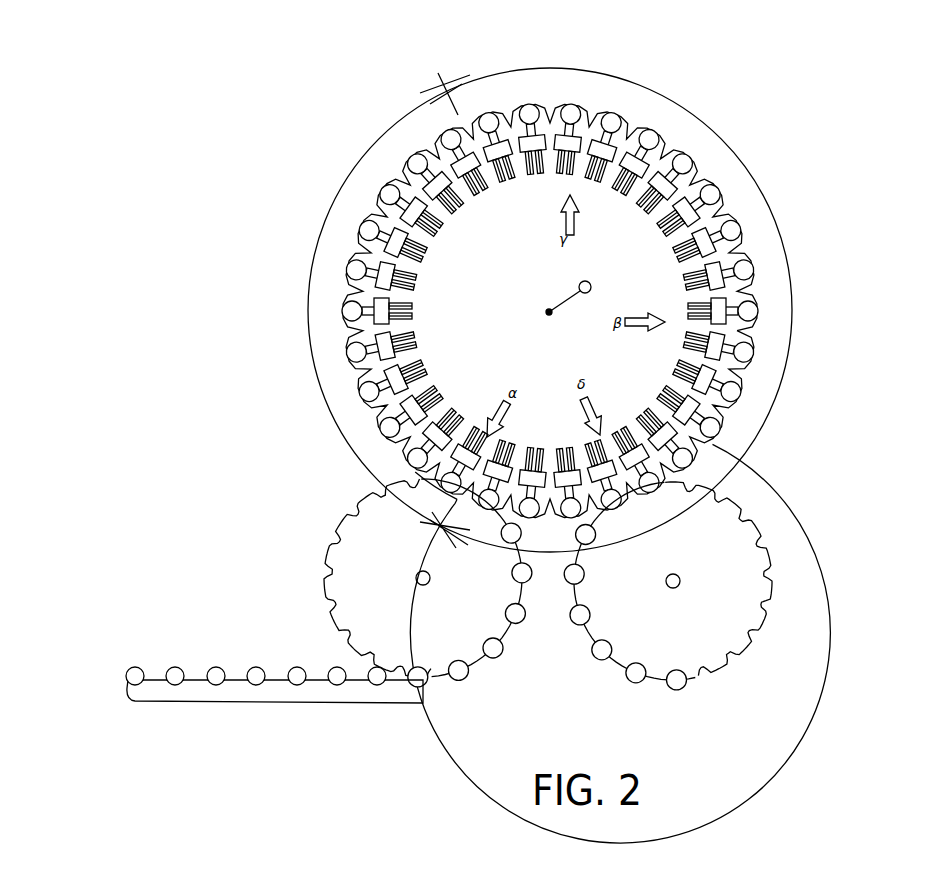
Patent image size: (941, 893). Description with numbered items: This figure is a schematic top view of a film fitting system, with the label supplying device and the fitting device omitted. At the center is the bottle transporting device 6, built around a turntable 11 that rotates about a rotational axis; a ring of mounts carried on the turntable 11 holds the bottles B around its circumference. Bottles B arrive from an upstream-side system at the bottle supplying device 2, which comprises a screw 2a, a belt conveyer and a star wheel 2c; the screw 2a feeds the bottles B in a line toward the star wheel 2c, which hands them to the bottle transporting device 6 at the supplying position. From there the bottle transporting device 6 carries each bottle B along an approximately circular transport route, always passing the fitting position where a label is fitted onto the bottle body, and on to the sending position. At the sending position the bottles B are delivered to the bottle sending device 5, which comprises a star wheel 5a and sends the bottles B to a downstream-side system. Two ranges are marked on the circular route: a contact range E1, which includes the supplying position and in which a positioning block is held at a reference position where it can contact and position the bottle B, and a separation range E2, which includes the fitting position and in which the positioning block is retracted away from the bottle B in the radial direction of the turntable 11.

The bottle transporting device 6 is at (683, 50).
The turntable 11 is at (545, 195).
The bottle B is at (683, 160).
The contact range E1 is at (555, 577).
The separation range E2 is at (802, 273).
The bottle supplying device 2 is at (329, 603).
The star wheel 2c is at (366, 584).
The screw 2a is at (238, 692).
The bottle sending device 5 is at (743, 578).
The star wheel 5a is at (733, 603).